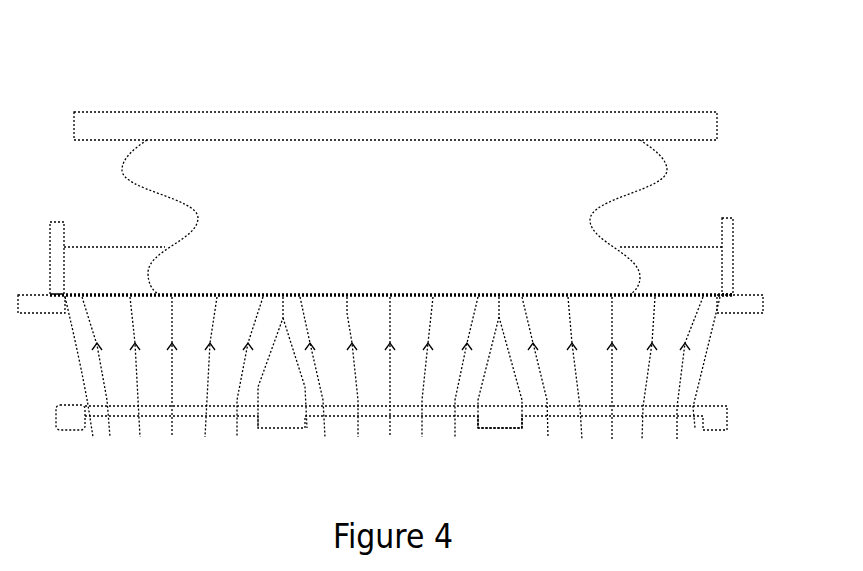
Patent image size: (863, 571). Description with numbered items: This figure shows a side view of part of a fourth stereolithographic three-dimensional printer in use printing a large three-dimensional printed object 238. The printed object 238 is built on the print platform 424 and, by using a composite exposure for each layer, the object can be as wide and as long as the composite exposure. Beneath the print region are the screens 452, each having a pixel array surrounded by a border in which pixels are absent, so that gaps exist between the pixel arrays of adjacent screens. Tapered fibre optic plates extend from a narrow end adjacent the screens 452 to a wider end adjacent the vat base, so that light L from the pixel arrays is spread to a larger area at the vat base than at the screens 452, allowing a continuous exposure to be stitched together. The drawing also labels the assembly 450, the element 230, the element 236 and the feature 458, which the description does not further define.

The print platform 424 is at (305, 125).
The 3D printed object 238 is at (570, 168).
The support post 230 is at (722, 218).
The horizontal member 236 is at (703, 270).
The light L is at (172, 357).
The screens 452 is at (347, 416).
The notch 458 is at (505, 428).
The assembly 450 is at (754, 458).